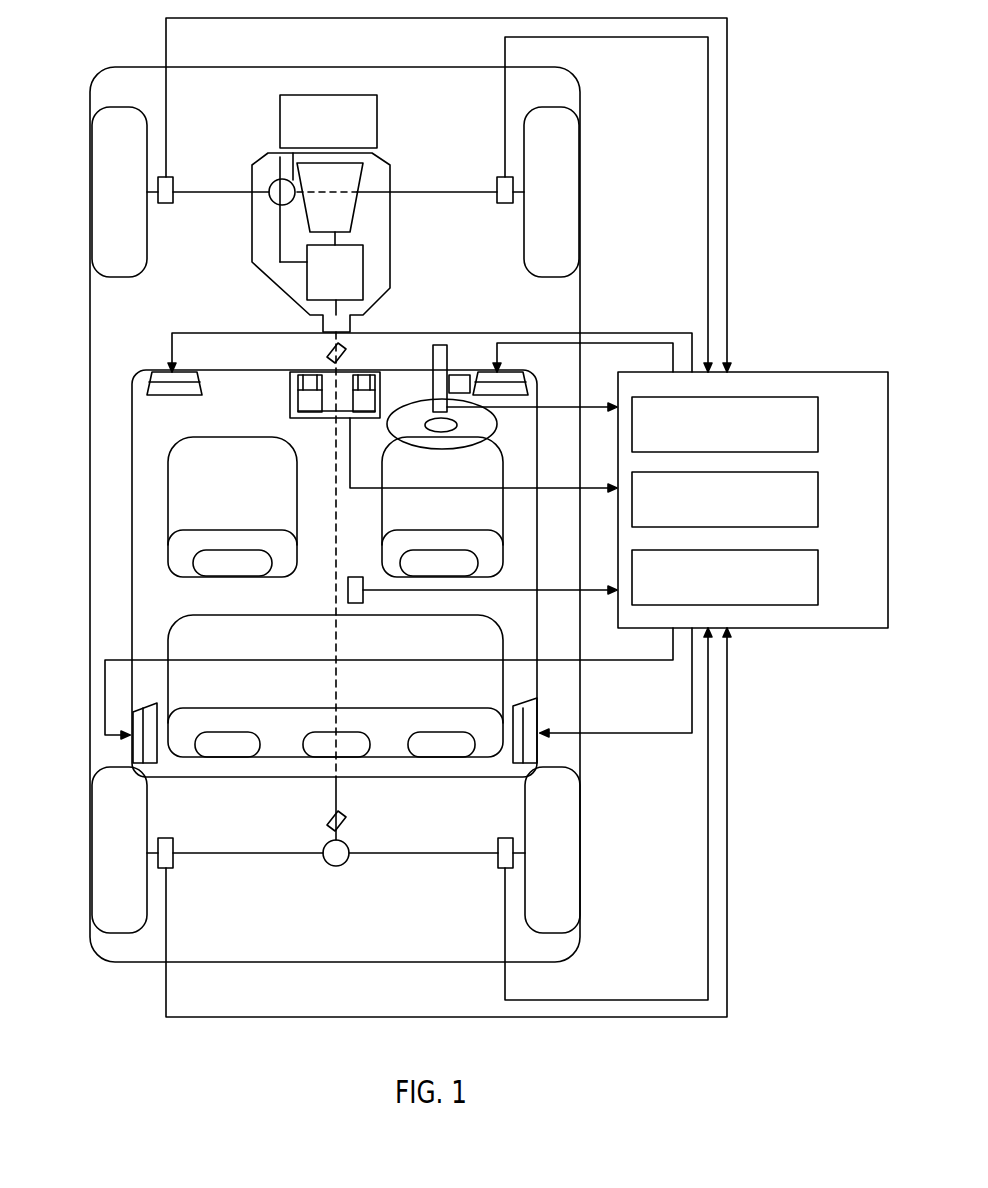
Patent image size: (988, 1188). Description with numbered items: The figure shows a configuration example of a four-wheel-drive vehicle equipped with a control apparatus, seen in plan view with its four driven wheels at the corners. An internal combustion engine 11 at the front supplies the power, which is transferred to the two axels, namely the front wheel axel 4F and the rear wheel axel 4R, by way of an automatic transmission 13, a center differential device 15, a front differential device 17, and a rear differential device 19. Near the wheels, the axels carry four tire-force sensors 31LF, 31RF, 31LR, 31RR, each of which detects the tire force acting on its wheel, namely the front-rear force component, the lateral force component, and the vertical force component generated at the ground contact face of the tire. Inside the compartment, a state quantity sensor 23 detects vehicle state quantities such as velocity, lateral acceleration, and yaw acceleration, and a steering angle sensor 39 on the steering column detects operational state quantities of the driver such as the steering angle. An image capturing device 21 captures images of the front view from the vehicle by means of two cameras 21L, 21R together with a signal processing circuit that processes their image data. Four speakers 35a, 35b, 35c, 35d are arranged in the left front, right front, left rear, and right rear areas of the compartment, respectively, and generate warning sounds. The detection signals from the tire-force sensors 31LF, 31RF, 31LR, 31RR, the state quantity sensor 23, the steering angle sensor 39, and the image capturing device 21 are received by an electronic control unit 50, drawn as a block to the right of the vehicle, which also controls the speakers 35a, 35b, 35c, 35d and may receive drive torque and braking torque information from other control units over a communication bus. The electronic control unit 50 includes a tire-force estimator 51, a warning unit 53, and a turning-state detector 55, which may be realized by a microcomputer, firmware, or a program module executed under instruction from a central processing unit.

The front wheel axel 4F is at (236, 196).
The rear wheel axel 4R is at (226, 856).
The internal combustion engine 11 is at (377, 113).
The automatic transmission 13 is at (355, 213).
The center differential device 15 is at (366, 262).
The front differential device 17 is at (271, 180).
The rear differential device 19 is at (345, 860).
The image capturing device 21 is at (422, 419).
The camera 21L is at (297, 400).
The camera 21R is at (363, 398).
The state quantity sensor 23 is at (348, 590).
The tire-force sensor 31LF is at (165, 204).
The tire-force sensor 31RF is at (503, 204).
The tire-force sensor 31LR is at (166, 836).
The tire-force sensor 31RR is at (505, 836).
The speaker 35a is at (157, 371).
The speaker 35b is at (511, 372).
The speaker 35c is at (127, 742).
The speaker 35d is at (525, 703).
The steering angle sensor 39 is at (456, 377).
The electronic control unit 50 is at (779, 500).
The tire-force estimator 51 is at (818, 417).
The warning unit 53 is at (818, 495).
The turning-state detector 55 is at (818, 572).